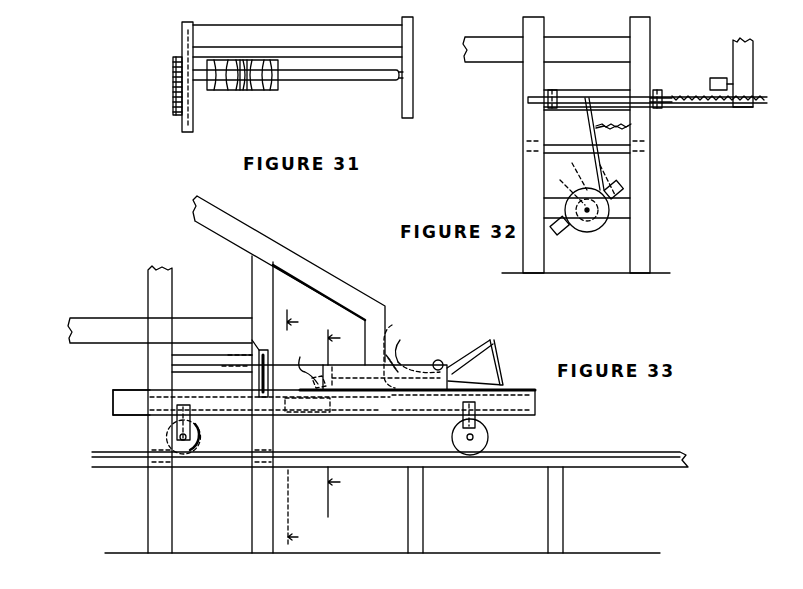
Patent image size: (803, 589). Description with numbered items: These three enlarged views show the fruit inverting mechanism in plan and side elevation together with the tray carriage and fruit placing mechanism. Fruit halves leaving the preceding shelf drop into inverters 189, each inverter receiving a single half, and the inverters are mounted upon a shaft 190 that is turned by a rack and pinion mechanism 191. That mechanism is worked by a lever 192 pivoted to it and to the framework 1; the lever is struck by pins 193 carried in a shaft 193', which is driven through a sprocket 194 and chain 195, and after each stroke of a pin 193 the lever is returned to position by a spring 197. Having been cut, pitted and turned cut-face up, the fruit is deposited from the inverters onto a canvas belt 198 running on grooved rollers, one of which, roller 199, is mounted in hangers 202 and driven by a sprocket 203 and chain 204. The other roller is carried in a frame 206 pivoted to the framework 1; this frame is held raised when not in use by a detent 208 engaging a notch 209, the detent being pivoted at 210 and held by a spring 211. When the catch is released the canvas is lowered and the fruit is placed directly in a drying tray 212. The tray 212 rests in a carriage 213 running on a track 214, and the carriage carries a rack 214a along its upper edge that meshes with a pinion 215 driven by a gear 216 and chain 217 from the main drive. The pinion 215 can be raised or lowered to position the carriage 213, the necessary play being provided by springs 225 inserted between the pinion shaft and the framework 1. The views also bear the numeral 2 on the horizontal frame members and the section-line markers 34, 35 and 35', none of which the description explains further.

In FIG. 31, the framework 1 is at (409, 52).
In FIG. 32, the framework 1 is at (523, 82).
In FIG. 33, the framework 1 is at (172, 508).
In FIG. 32, the frame beam 2 is at (493, 43).
In FIG. 33, the frame beam 2 is at (122, 320).
In FIG. 33, the section line 34- 34 is at (342, 423).
In FIG. 33, the section line 35- 35 is at (301, 320).
In FIG. 33, the section line 35' is at (304, 507).
In FIG. 31, the inverter 189 is at (256, 85).
In FIG. 32, the inverter 189 is at (722, 78).
In FIG. 31, the shaft 190 is at (350, 80).
In FIG. 32, the shaft 190 is at (722, 90).
In FIG. 31, the rack and pinion mechanism 191 is at (173, 89).
In FIG. 32, the rack and pinion mechanism 191 is at (720, 99).
In FIG. 32, the lever 192 is at (590, 133).
In FIG. 32, the pins 193 is at (577, 233).
In FIG. 32, the shaft 193' is at (643, 197).
In FIG. 32, the sprocket 194 is at (587, 210).
In FIG. 32, the chain 195 is at (556, 180).
In FIG. 32, the spring 197 is at (632, 127).
In FIG. 33, the canvas belt 198 is at (480, 385).
In FIG. 33, the roller 199 is at (326, 380).
In FIG. 33, the hangers 202 is at (345, 362).
In FIG. 33, the sprocket 203 is at (307, 403).
In FIG. 33, the chain 204 is at (306, 363).
In FIG. 33, the frame 206 is at (490, 340).
In FIG. 33, the detent 208 is at (440, 360).
In FIG. 33, the notch 209 is at (418, 362).
In FIG. 33, the pivot 210 is at (411, 347).
In FIG. 33, the spring 211 is at (400, 352).
In FIG. 33, the drying tray 212 is at (535, 408).
In FIG. 33, the carriage 213 is at (133, 415).
In FIG. 33, the track 214 is at (405, 455).
In FIG. 33, the rack 214a is at (128, 390).
In FIG. 33, the pinion 215 is at (235, 384).
In FIG. 33, the gear 216 is at (245, 372).
In FIG. 33, the chain 217 is at (225, 359).
In FIG. 33, the springs 225 is at (252, 340).